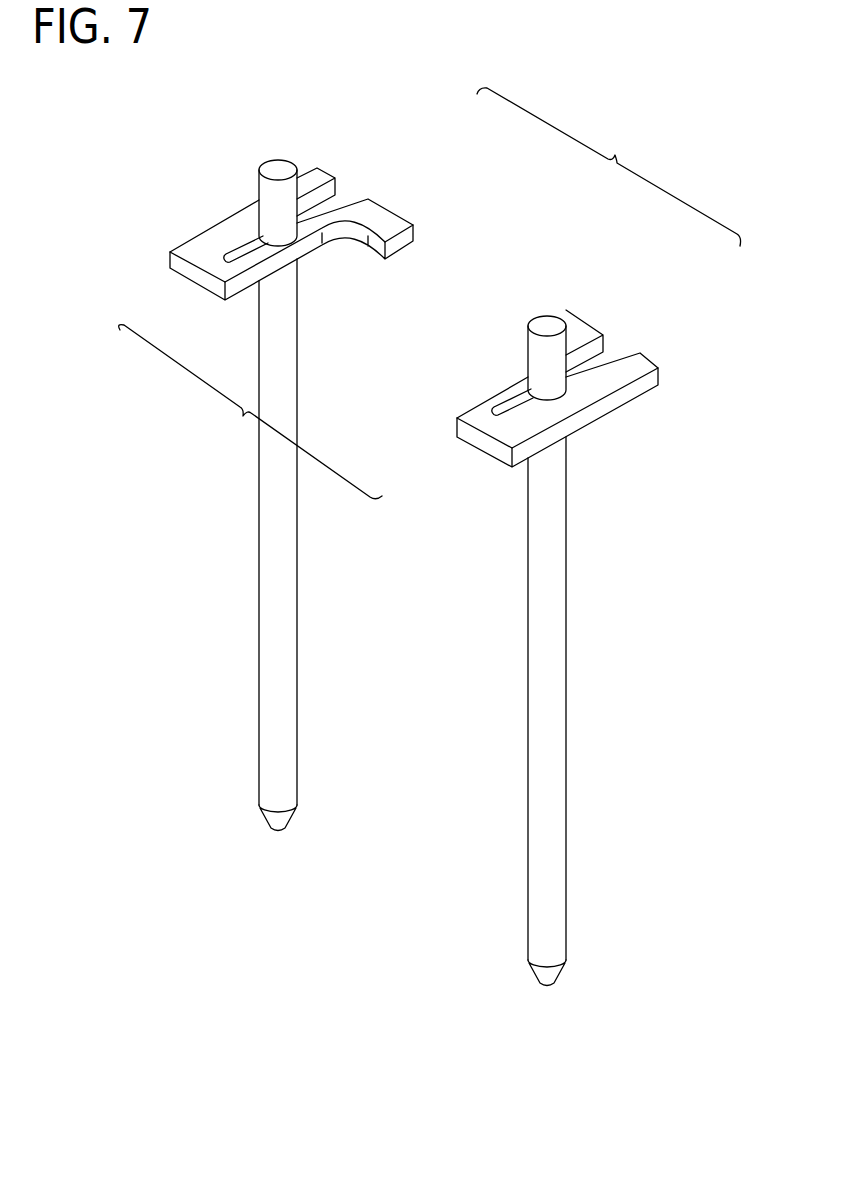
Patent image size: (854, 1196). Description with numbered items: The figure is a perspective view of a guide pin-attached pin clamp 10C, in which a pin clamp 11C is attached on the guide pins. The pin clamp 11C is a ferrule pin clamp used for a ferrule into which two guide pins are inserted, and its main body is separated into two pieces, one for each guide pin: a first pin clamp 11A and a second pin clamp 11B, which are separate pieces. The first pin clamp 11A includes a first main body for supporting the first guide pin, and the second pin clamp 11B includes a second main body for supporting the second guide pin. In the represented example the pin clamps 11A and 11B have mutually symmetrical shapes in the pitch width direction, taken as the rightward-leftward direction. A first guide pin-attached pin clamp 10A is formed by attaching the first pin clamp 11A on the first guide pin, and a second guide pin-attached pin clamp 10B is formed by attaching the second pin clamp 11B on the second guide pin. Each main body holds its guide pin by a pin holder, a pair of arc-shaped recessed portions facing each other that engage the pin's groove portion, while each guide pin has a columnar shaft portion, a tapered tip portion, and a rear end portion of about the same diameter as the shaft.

The first guide pin-attached pin clamp 10A is at (324, 491).
The second guide pin-attached pin clamp 10B is at (539, 638).
The guide pin-attached pin clamp 10C is at (250, 412).
The first pin clamp 11A is at (342, 196).
The second pin clamp 11B is at (591, 346).
The pin clamp 11C is at (609, 167).